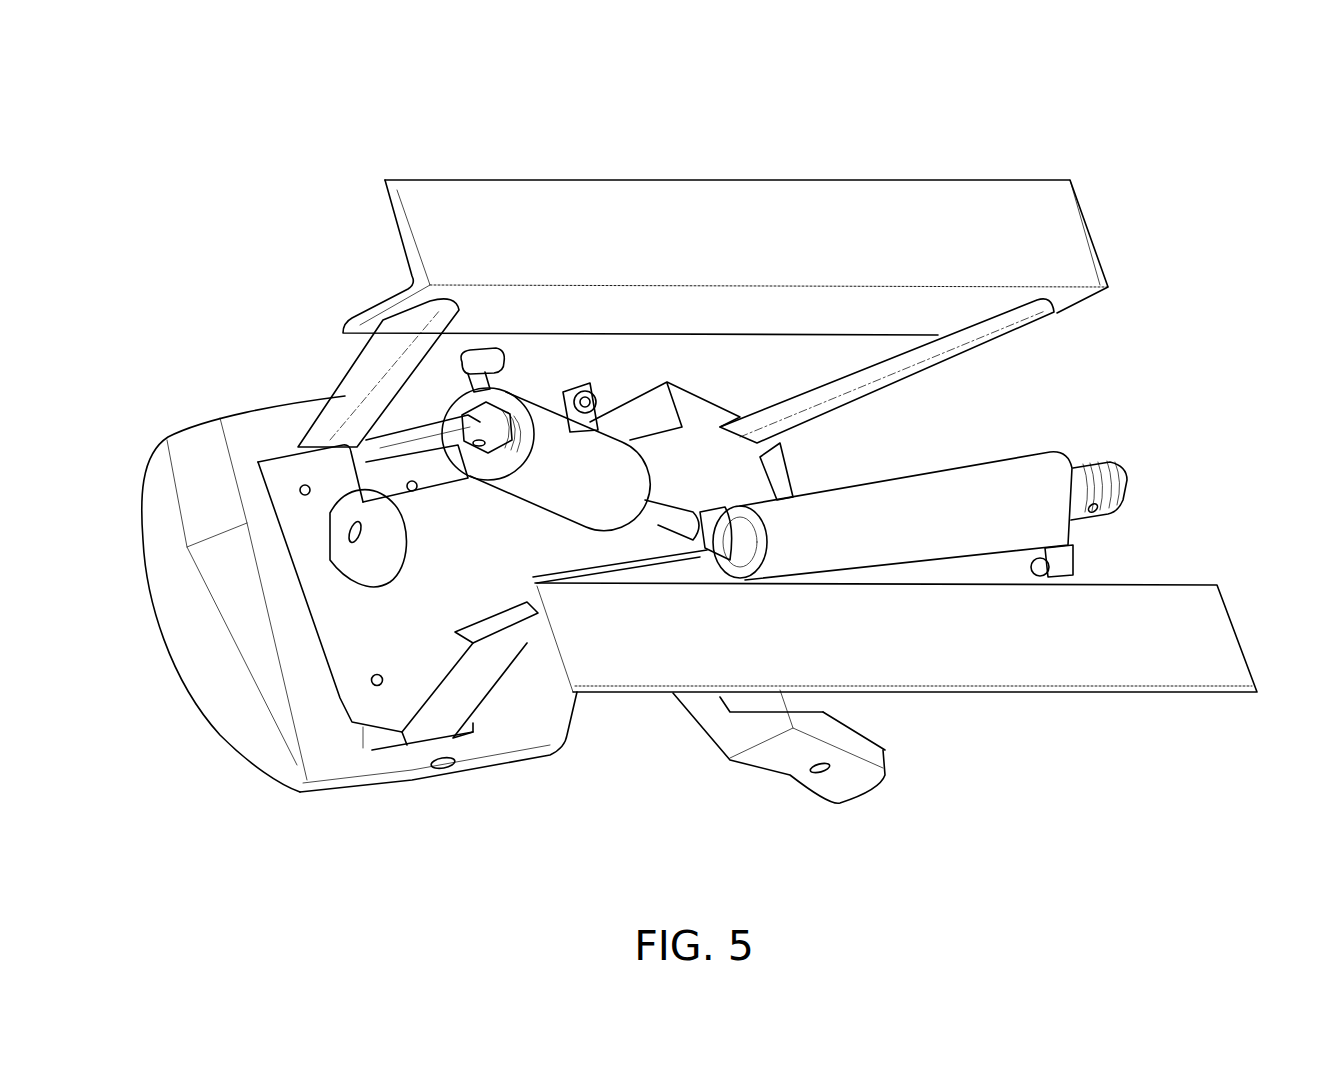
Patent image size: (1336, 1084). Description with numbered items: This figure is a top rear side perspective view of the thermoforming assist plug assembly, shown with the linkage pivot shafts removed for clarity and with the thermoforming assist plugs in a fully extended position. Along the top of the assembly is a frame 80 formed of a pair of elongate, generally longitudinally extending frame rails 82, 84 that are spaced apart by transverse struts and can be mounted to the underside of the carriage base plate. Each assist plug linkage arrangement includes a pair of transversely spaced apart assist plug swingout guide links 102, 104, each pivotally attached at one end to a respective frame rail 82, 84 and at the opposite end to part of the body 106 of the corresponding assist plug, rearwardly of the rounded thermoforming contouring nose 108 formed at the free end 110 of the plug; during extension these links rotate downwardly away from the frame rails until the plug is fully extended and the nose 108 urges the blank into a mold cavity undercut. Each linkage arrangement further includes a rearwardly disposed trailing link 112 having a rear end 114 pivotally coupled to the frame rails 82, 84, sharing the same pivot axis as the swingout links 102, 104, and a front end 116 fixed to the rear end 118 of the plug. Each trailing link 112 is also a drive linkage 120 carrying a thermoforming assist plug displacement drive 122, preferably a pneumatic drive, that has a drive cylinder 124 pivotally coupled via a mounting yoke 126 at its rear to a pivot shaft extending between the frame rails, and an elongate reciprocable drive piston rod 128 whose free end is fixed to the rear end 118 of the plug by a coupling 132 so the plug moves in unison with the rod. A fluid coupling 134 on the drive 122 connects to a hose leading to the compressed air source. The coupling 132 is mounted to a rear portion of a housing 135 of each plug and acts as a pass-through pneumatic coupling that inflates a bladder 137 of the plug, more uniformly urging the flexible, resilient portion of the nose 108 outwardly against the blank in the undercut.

The frame 80 is at (1086, 163).
The frame rail 82 is at (403, 193).
The frame rail 84 is at (1175, 685).
The assist plug swingout guide link 102 is at (355, 410).
The assist plug swingout guide link 104 is at (443, 708).
The body 106 is at (313, 768).
The thermoforming contouring nose 108 is at (207, 722).
The free end 110 is at (185, 663).
The trailing link 112 is at (960, 458).
The rear end 114 is at (465, 420).
The front end 116 is at (530, 578).
The rear end 118 is at (665, 382).
The drive linkage 120 is at (415, 411).
The thermoforming assist plug displacement drive 122 is at (525, 372).
The drive cylinder 124 is at (578, 490).
The mounting yoke 126 is at (470, 432).
The drive piston rod 128 is at (663, 513).
The coupling 132 is at (523, 603).
The fluid coupling 134 is at (487, 352).
The housing 135 is at (743, 473).
The bladder 137 is at (278, 773).